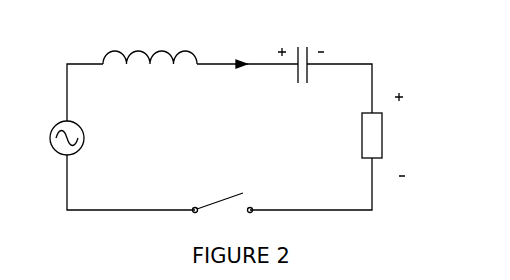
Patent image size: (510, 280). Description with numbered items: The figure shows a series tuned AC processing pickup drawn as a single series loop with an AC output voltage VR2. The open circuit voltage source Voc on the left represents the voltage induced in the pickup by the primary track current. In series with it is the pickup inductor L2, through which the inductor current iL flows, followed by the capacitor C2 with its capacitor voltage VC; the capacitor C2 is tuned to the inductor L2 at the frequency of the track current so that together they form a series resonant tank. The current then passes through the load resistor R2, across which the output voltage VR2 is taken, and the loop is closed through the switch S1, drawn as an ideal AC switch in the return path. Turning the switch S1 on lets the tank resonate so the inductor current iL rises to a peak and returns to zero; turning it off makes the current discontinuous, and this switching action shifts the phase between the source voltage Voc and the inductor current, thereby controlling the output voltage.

The inductor L2 is at (150, 74).
The inductor current iL is at (237, 79).
The capacitor C2 is at (304, 82).
The capacitor voltage VC is at (314, 52).
The resistor R2 is at (354, 135).
The AC output voltage VR2 is at (410, 134).
The switch S1 is at (223, 185).
The open circuit voltage source Voc is at (84, 138).